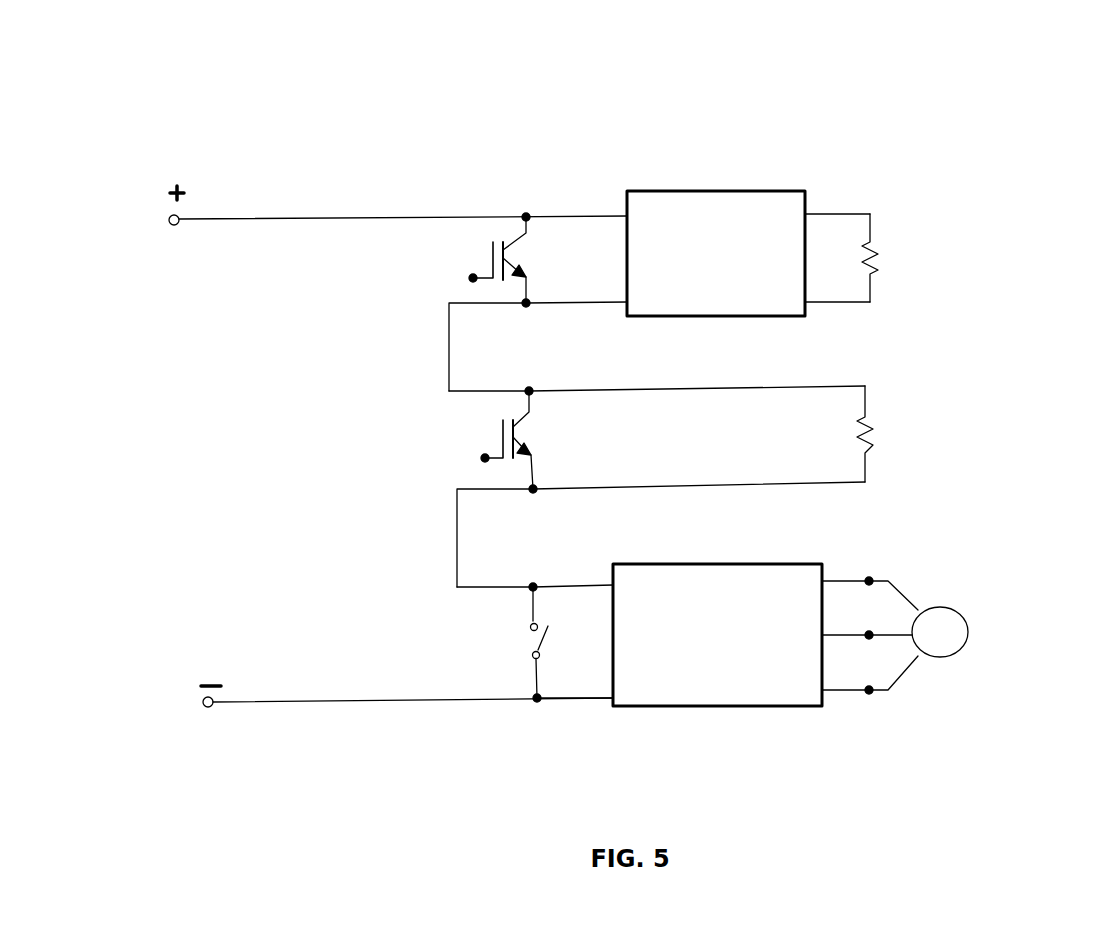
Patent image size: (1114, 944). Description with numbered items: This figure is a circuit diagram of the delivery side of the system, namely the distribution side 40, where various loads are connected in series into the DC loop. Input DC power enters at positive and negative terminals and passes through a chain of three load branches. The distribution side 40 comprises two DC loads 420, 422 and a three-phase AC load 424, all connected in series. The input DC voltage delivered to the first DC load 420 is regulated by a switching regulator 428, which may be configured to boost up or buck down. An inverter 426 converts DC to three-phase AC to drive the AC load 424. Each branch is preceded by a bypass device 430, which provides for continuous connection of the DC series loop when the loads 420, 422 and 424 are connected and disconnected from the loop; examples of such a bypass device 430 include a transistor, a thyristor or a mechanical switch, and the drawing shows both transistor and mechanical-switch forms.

The distribution side 40 is at (142, 91).
The DC load 420 is at (906, 258).
The DC load 422 is at (768, 437).
The three-phase AC load 424 is at (956, 635).
The inverter 426 is at (715, 564).
The switching regulator 428 is at (723, 190).
The bypass device 430 is at (527, 232).